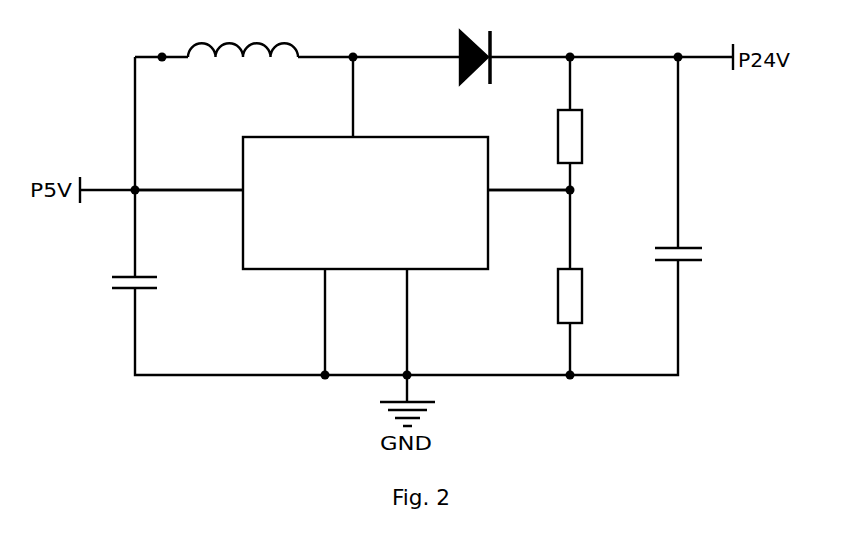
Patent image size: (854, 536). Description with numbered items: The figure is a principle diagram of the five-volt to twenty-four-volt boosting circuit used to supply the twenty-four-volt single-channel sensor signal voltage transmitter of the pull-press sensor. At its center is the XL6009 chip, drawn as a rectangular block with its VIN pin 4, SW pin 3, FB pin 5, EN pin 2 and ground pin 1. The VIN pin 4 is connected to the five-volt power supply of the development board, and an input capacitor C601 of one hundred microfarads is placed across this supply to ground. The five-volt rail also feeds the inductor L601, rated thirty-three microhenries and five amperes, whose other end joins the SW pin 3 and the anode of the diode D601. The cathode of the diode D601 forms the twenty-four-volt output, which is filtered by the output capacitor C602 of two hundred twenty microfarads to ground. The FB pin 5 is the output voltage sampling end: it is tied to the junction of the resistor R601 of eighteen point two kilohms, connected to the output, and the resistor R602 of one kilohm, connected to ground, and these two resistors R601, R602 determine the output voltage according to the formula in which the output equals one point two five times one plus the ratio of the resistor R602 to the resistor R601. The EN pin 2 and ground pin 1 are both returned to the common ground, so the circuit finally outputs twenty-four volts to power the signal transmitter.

The XL6009 chip XL6009 is at (351, 191).
The inductor L601 is at (242, 54).
The diode D601 is at (460, 59).
The resistor R601 is at (599, 123).
The resistor R602 is at (598, 282).
The capacitor C601 is at (188, 296).
The capacitor C602 is at (733, 271).
The GND pin 1 is at (395, 335).
The EN pin 2 is at (313, 322).
The SW pin 3 is at (340, 97).
The VIN pin 4 is at (189, 179).
The FB pin 5 is at (529, 179).